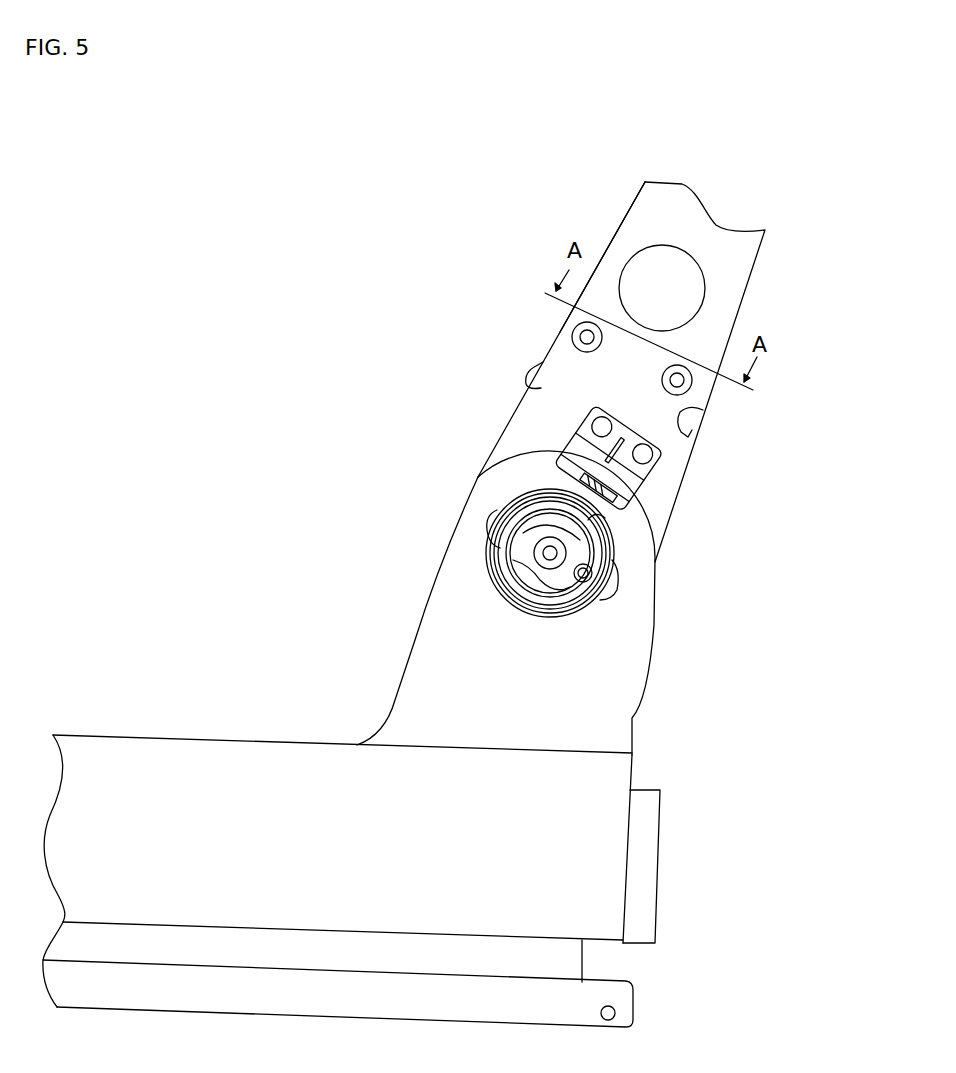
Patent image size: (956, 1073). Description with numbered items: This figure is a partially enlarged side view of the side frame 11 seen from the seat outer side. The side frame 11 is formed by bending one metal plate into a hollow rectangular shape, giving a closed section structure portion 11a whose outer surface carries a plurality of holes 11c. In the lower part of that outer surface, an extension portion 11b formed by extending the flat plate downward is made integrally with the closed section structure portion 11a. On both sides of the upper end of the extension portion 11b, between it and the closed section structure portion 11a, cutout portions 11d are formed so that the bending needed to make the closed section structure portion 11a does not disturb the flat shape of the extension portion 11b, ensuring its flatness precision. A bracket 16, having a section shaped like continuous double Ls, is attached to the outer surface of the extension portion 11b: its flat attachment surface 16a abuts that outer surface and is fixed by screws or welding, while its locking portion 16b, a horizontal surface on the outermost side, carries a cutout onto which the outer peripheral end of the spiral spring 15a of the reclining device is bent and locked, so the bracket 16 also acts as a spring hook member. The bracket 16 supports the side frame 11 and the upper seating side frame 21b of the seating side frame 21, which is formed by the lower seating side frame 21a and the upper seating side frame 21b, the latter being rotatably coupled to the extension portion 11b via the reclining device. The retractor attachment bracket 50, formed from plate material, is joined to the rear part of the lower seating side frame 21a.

The side frame 11 is at (588, 372).
The closed section structure portion 11a is at (553, 340).
The extension portion 11b is at (532, 423).
The holes 11c is at (704, 270).
The cutout portions 11d is at (531, 387).
The spiral spring 15a is at (580, 612).
The bracket 16 is at (691, 463).
The attachment surface 16a is at (647, 468).
The locking portion 16b is at (617, 492).
The seating side frame 21 is at (430, 739).
The lower seating side frame 21a is at (613, 775).
The upper seating side frame 21b is at (633, 720).
The retractor attachment bracket 50 is at (657, 875).